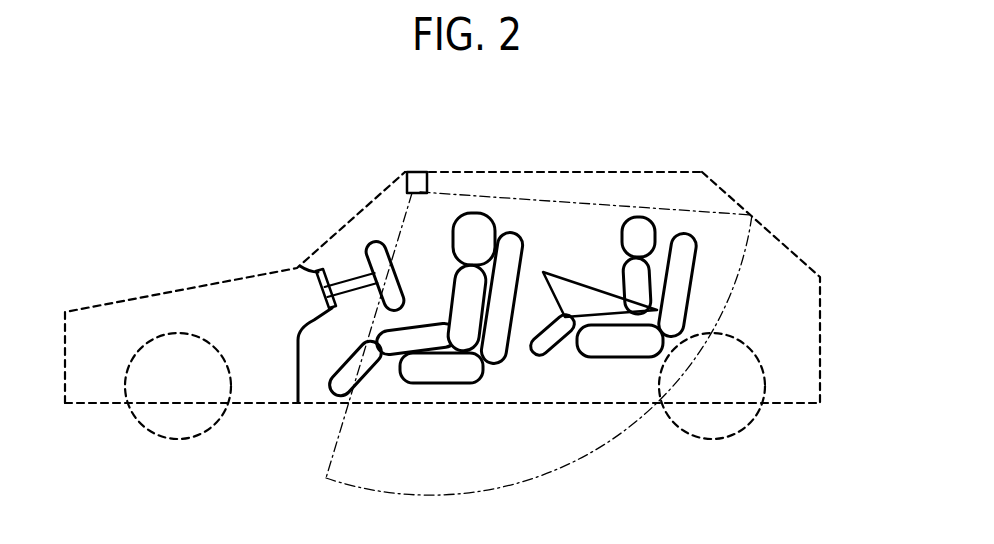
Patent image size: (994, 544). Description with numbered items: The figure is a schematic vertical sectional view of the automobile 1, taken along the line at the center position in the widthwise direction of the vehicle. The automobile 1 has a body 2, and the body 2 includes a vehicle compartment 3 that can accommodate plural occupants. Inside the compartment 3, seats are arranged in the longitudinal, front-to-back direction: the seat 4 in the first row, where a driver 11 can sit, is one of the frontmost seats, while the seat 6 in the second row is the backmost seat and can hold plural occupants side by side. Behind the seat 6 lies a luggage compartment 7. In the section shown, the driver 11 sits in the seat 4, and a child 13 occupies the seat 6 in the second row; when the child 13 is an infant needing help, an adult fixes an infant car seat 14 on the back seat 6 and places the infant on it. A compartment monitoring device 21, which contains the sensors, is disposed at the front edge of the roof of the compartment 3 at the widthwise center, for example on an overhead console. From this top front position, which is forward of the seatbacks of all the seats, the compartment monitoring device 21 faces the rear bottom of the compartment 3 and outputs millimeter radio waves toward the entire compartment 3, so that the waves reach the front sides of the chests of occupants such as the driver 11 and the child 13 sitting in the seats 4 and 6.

The automobile 1 is at (257, 198).
The body 2 is at (129, 303).
The vehicle compartment 3 is at (552, 190).
The seat 4 is at (441, 383).
The seat 6 is at (600, 355).
The luggage compartment 7 is at (790, 310).
The driver 11 is at (472, 216).
The child 13 is at (640, 217).
The infant car seat 14 is at (570, 293).
The compartment monitoring device 21 is at (418, 172).